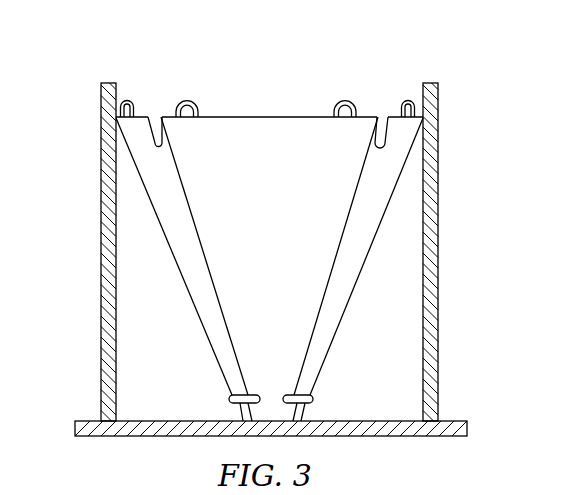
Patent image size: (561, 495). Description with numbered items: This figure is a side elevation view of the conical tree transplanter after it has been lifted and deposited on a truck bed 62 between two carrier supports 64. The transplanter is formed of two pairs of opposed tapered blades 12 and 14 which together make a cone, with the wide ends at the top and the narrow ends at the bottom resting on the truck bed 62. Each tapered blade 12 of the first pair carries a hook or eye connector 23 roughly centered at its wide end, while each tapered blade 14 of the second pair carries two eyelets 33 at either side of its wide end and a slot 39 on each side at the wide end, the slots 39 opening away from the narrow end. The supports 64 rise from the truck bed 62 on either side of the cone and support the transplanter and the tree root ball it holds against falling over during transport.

The tapered blade 12 is at (195, 275).
The tapered blade 14 is at (266, 143).
The connector 23 is at (124, 100).
The eyelet 33 is at (187, 100).
The slot 39 is at (150, 117).
The truck bed 62 is at (176, 420).
The support 64 is at (102, 190).